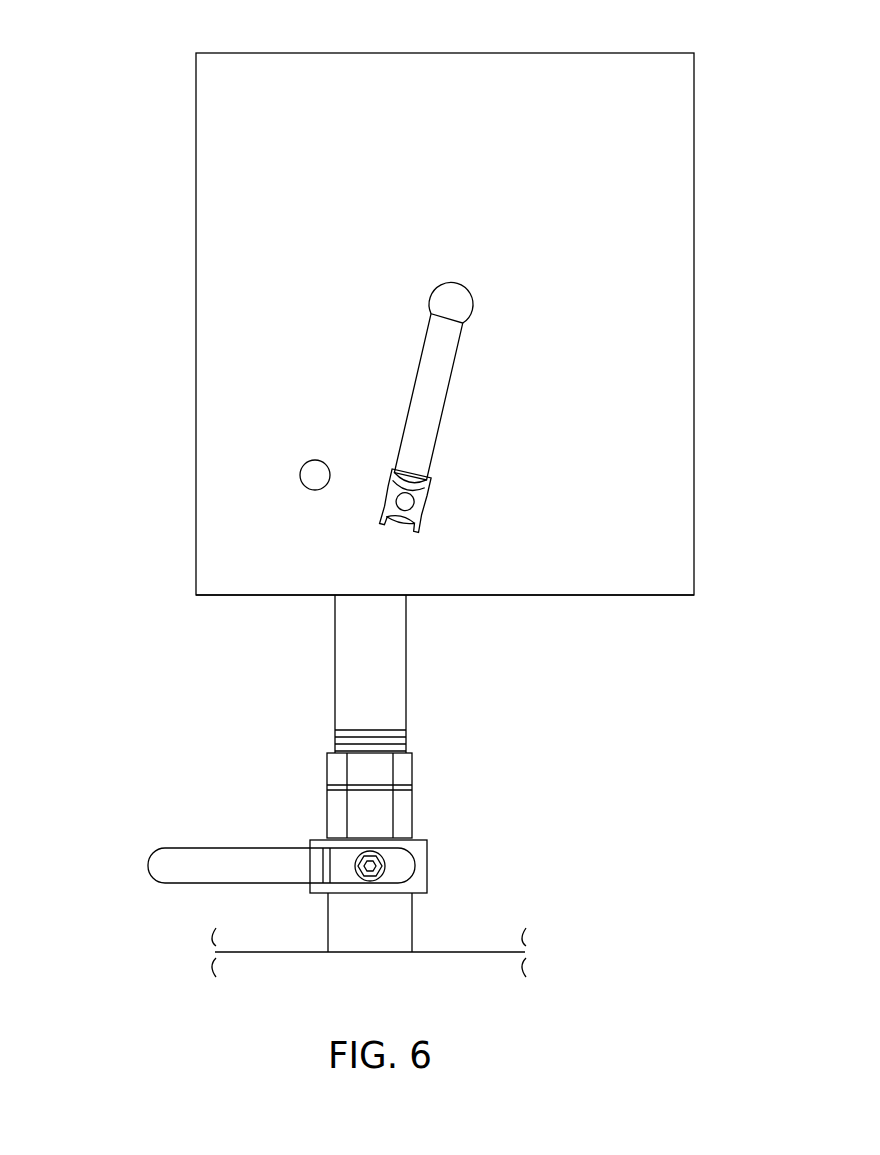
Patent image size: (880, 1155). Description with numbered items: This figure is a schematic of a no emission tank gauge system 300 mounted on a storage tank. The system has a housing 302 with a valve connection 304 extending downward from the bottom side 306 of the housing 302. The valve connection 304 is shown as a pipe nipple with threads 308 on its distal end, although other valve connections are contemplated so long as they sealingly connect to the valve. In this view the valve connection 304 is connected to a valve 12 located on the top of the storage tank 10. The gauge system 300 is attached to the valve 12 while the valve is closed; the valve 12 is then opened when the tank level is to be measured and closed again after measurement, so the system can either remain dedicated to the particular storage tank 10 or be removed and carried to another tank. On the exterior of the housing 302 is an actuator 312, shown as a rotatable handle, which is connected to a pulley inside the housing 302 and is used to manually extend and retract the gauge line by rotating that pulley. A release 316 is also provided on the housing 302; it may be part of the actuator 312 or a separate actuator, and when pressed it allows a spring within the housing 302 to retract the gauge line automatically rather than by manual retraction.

The no emission tank gauge system 300 is at (163, 52).
The housing 302 is at (232, 318).
The valve connection 304 is at (347, 637).
The bottom side 306 is at (577, 596).
The threads 308 is at (406, 737).
The actuator 312 is at (445, 410).
The release 316 is at (300, 474).
The valve 12 is at (430, 870).
The storage tank 10 is at (462, 953).